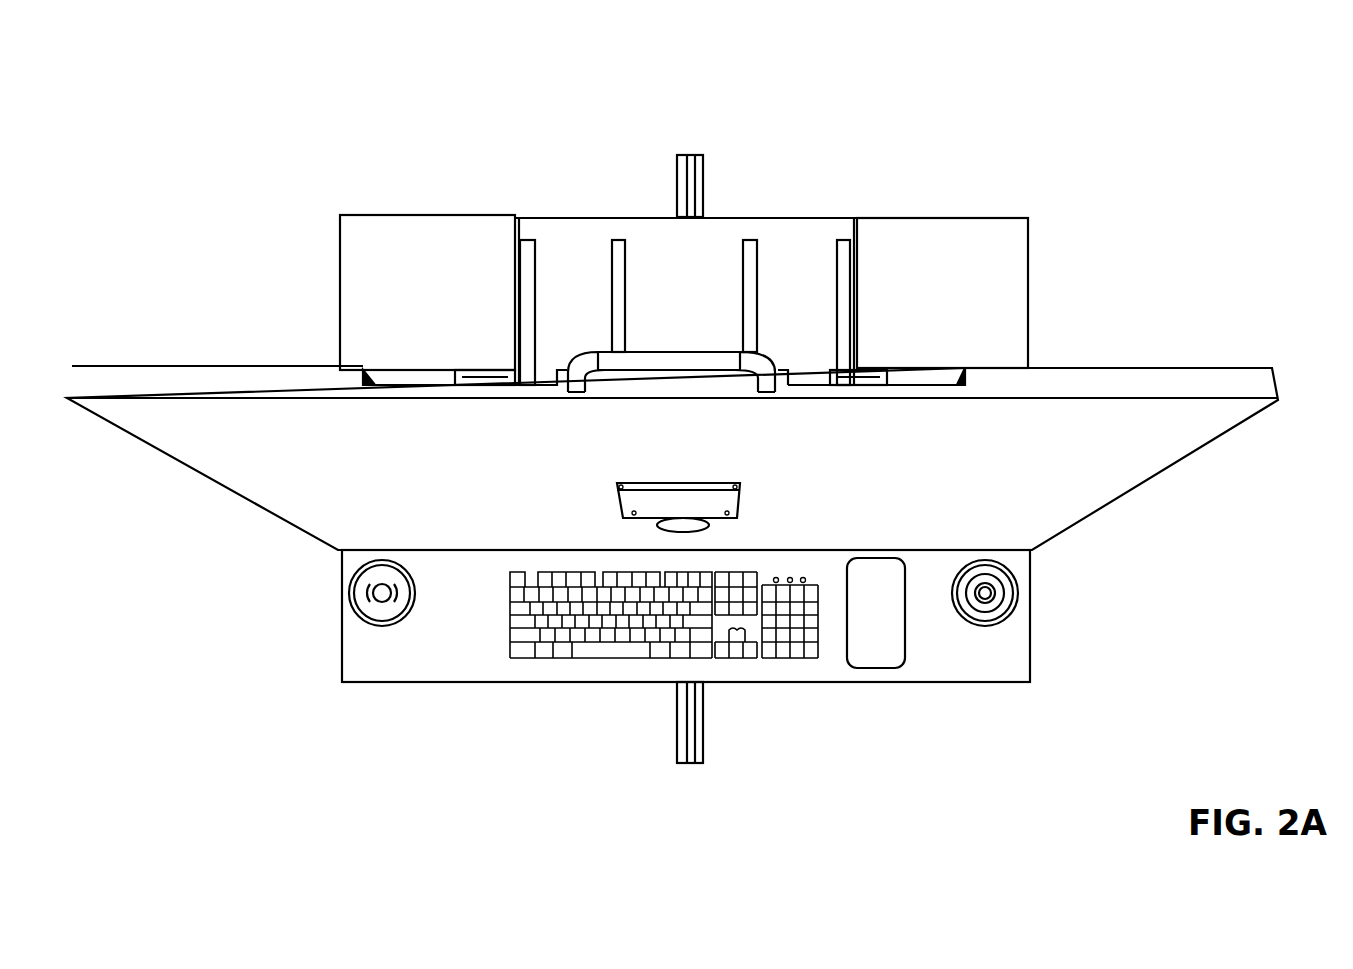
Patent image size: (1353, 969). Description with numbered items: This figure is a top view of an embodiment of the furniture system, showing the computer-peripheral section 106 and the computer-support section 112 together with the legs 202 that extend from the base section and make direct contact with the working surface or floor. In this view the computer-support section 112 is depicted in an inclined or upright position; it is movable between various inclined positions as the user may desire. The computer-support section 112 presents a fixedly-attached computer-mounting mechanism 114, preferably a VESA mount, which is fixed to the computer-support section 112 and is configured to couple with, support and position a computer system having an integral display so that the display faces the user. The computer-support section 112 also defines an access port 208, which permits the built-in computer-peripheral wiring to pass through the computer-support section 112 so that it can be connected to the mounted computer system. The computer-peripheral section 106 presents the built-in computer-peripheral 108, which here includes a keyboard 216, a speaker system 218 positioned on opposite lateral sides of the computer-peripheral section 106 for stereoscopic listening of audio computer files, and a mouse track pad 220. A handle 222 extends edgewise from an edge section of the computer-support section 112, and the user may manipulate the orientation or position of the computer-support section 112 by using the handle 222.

The computer-peripheral section 106 is at (465, 683).
The built-in computer-peripheral 108 is at (789, 857).
The computer-support section 112 is at (155, 378).
The fixedly-attached computer-mounting mechanism 114 is at (747, 503).
The legs 202 is at (678, 177).
The access port 208 is at (655, 527).
The keyboard 216 is at (812, 647).
The speaker system 218 is at (377, 625).
The mouse track pad 220 is at (875, 655).
The handle 222 is at (645, 353).